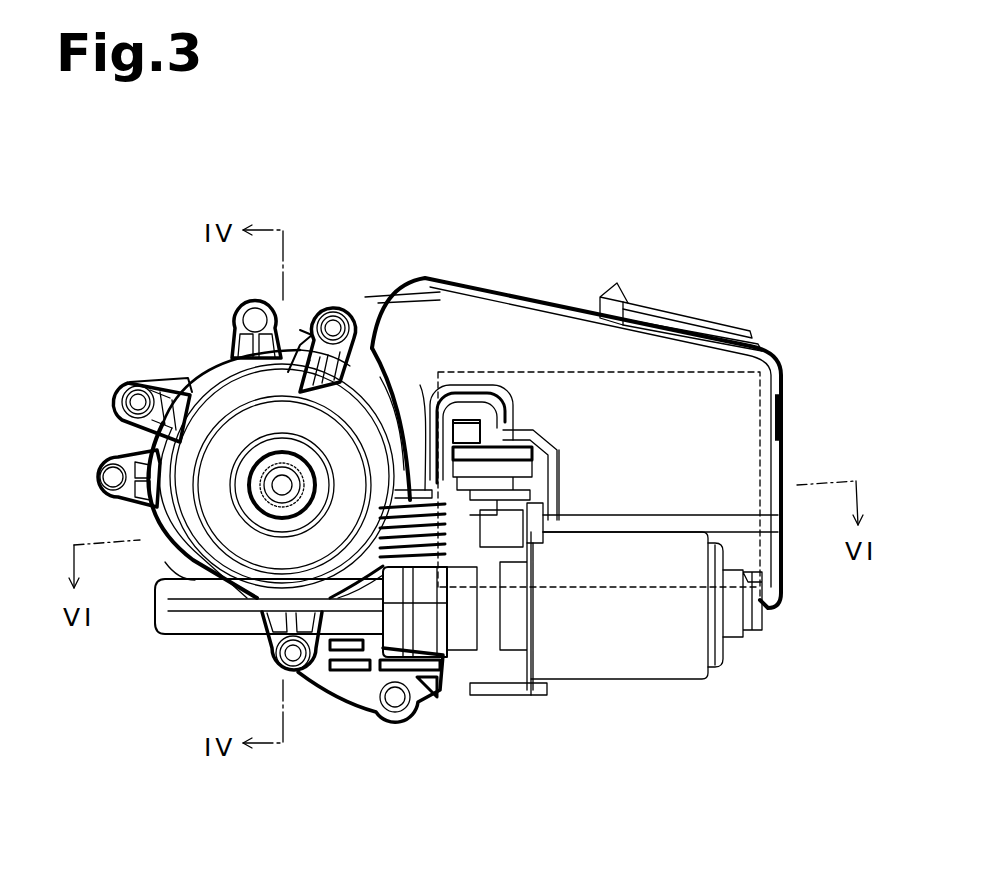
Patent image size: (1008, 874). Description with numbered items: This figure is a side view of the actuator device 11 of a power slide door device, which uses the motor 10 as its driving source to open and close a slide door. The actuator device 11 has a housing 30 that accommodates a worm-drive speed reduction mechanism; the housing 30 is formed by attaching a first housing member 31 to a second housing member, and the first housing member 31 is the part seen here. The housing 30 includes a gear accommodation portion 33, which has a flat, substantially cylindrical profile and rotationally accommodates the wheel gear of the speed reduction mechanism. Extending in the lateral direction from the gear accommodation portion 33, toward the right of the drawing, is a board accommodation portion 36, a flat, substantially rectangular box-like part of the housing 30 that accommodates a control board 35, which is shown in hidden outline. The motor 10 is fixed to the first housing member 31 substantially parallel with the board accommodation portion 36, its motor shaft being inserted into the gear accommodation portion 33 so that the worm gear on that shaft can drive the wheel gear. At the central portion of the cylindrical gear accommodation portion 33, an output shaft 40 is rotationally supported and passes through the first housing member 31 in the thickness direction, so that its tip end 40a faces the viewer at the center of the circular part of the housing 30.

The actuator device 11 is at (95, 212).
The motor 10 is at (710, 679).
The housing 30 is at (322, 476).
The first housing member 31 is at (388, 390).
The gear accommodation portion 33 is at (168, 565).
The control board 35 is at (497, 372).
The board accommodation portion 36 is at (572, 332).
The output shaft 40 is at (224, 422).
The tip end 40a is at (282, 465).